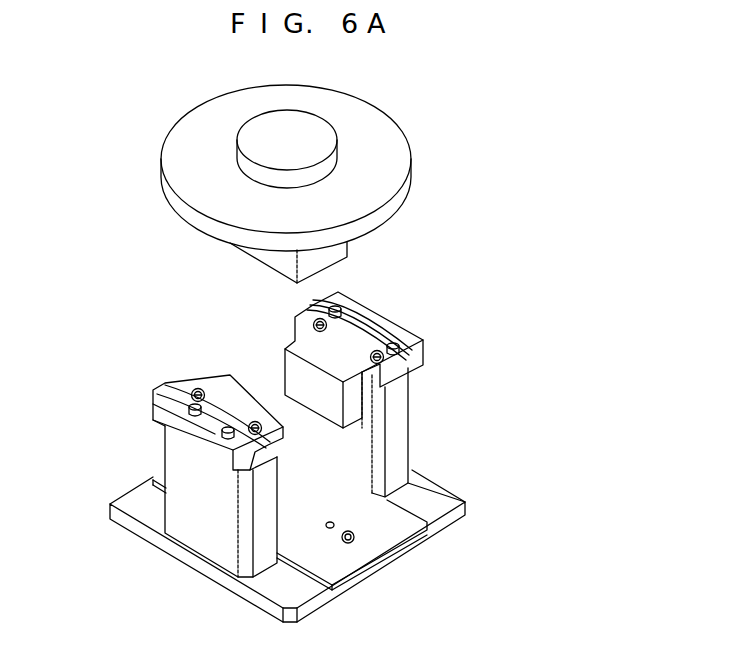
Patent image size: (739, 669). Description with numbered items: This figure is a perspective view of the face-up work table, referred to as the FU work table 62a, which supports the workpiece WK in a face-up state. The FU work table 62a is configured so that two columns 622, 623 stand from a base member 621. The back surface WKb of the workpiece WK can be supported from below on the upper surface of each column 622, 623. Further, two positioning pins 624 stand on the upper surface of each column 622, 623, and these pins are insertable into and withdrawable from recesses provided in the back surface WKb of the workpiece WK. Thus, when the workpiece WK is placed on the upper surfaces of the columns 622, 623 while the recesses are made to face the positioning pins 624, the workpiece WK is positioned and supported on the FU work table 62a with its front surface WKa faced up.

The workpiece WK is at (180, 148).
The front surface WKa is at (398, 158).
The back surface WKb is at (400, 208).
The FU work table 62a is at (477, 380).
The base member 621 is at (413, 543).
The column 622 is at (398, 444).
The column 623 is at (202, 528).
The positioning pin 624 is at (397, 343).